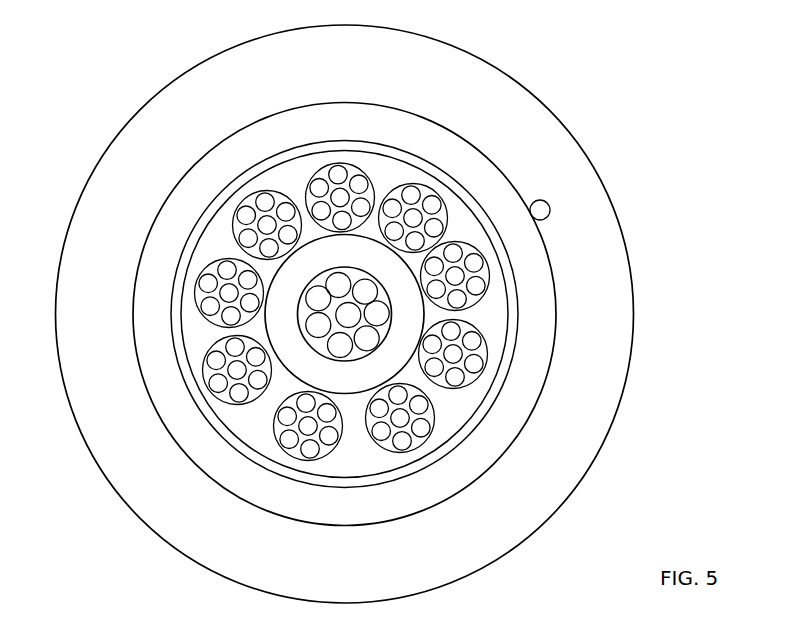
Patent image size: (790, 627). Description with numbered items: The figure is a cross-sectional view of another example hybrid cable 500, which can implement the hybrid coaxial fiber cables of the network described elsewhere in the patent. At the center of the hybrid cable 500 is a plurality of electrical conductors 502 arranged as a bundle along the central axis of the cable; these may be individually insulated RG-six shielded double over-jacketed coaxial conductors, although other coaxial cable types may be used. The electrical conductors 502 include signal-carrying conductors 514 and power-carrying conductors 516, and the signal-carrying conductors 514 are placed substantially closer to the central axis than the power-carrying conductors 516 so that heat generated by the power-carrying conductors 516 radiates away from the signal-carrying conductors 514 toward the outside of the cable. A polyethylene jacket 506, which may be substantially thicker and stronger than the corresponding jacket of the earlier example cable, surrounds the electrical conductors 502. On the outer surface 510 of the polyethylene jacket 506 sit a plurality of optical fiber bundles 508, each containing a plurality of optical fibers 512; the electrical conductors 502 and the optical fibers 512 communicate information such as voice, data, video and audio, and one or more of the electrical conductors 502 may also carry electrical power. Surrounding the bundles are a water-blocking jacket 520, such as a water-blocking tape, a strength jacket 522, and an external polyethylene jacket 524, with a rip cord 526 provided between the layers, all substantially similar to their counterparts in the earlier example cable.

The hybrid cable 500 is at (122, 86).
The electrical conductors 502 is at (400, 441).
The polyethylene jacket 506 is at (398, 362).
The optical fiber bundles 508 is at (277, 193).
The outer surface 510 is at (352, 396).
The optical fibers 512 is at (308, 447).
The signal-carrying conductors 514 is at (377, 314).
The power-carrying conductors 516 is at (318, 325).
The water-blocking jacket 520 is at (508, 376).
The strength jacket 522 is at (522, 418).
The external polyethylene jacket 524 is at (548, 119).
The rip cord 526 is at (550, 207).